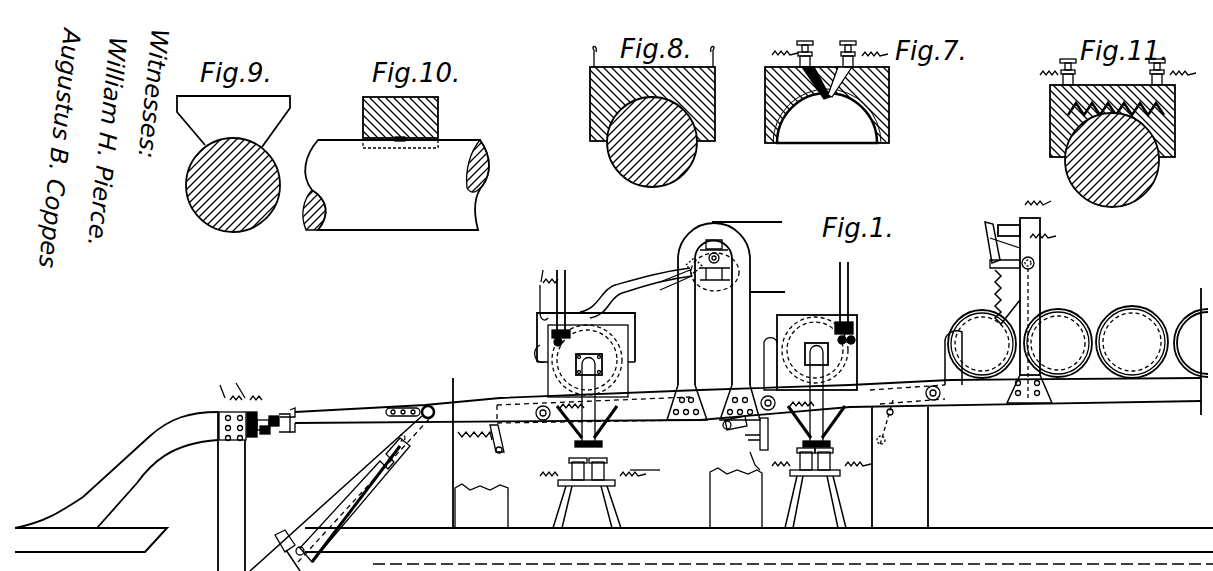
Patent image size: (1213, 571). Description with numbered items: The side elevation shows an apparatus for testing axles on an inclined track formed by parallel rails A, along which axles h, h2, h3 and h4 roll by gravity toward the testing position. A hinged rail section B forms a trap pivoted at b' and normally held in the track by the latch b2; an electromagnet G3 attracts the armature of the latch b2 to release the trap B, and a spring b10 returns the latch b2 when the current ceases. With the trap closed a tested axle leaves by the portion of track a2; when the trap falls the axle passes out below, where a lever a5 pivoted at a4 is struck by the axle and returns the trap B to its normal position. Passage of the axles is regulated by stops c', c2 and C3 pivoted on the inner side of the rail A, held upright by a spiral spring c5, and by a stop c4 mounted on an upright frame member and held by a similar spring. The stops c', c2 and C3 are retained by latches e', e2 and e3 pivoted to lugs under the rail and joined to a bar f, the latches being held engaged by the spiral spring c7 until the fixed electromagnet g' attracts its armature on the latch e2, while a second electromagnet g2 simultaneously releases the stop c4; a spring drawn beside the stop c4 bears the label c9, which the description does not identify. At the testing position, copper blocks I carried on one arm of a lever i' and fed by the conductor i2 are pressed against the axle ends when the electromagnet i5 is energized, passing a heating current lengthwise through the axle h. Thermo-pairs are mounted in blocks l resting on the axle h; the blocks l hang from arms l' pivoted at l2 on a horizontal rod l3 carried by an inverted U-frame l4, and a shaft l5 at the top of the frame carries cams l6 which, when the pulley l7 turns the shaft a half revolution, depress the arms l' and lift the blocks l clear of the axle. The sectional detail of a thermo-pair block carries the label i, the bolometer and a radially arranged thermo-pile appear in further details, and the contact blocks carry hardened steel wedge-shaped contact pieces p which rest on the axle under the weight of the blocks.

In FIG. 1, the rails A is at (759, 426).
In FIG. 1, the track portion a2 is at (116, 482).
In FIG. 1, the pivot a4 is at (310, 560).
In FIG. 1, the lever a5 is at (340, 493).
In FIG. 1, the trap B is at (748, 400).
In FIG. 1, the hinge b' is at (413, 397).
In FIG. 1, the latch b2 is at (295, 425).
In FIG. 1, the spring b10 is at (268, 435).
In FIG. 1, the electromagnet G3 is at (270, 413).
In FIG. 1, the stop c' is at (530, 368).
In FIG. 1, the stop c2 is at (775, 342).
In FIG. 1, the stop C3 is at (945, 330).
In FIG. 1, the stop c4 is at (1030, 288).
In FIG. 1, the spiral spring c5 is at (667, 420).
In FIG. 1, the spiral spring c7 is at (475, 446).
In FIG. 1, the spring c9 is at (1001, 297).
In FIG. 1, the latch e' is at (506, 439).
In FIG. 1, the latch e2 is at (718, 430).
In FIG. 1, the latch e3 is at (888, 432).
In FIG. 1, the bar f is at (650, 458).
In FIG. 1, the electromagnet g' is at (748, 444).
In FIG. 1, the electromagnet g2 is at (1008, 222).
In FIG. 1, the axle h is at (700, 382).
In FIG. 1, the axle h2 is at (982, 344).
In FIG. 1, the axle h3 is at (1058, 343).
In FIG. 1, the axle h4 is at (1132, 342).
In FIG. 7, the die block i is at (835, 105).
In FIG. 1, the lever i' is at (713, 407).
In FIG. 1, the conductor i2 is at (566, 272).
In FIG. 1, the electromagnet i5 is at (600, 466).
In FIG. 1, the copper blocks I is at (612, 325).
In FIG. 1, the block l is at (532, 295).
In FIG. 1, the arms l' is at (636, 285).
In FIG. 1, the pivot l2 is at (688, 263).
In FIG. 1, the horizontal rod l3 is at (737, 215).
In FIG. 1, the inverted U-frame l4 is at (683, 308).
In FIG. 1, the horizontal shaft l5 is at (722, 256).
In FIG. 1, the cams l6 is at (716, 240).
In FIG. 1, the pulley l7 is at (742, 262).
In FIG. 9, the contact pieces p is at (250, 140).
In FIG. 10, the contact pieces p is at (430, 136).